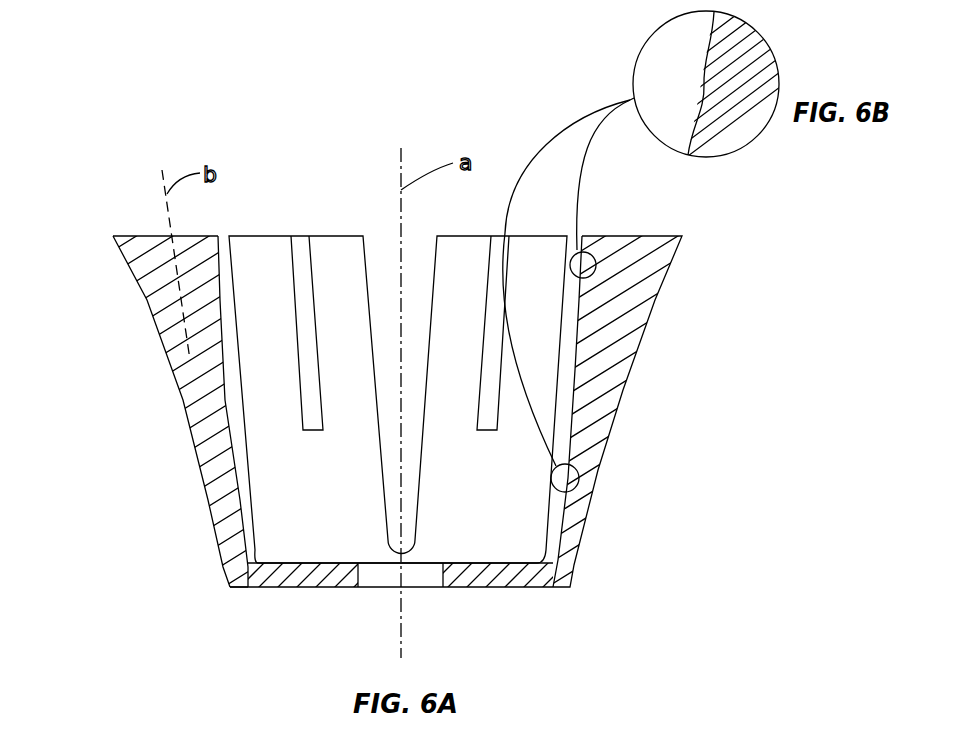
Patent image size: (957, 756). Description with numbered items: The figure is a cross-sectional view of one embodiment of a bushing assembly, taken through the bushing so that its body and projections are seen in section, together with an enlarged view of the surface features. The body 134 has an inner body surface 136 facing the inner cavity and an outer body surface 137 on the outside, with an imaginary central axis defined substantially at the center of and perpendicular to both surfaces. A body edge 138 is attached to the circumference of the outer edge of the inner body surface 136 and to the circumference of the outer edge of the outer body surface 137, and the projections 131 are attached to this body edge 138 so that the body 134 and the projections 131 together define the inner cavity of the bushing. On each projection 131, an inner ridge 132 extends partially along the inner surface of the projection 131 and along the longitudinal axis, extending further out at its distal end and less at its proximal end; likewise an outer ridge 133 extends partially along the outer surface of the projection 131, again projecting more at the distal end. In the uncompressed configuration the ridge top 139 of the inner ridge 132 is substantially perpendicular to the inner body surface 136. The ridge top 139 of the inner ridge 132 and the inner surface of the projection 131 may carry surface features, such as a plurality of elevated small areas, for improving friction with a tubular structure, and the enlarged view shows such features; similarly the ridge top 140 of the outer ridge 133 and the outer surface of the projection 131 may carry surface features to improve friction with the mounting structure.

The projection 131 is at (607, 338).
The inner ridge 132 is at (215, 253).
The outer ridge 133 is at (114, 245).
The body 134 is at (497, 577).
The inner body surface 136 is at (300, 563).
The outer body surface 137 is at (302, 582).
The body edge 138 is at (240, 575).
The ridge top 139 is at (225, 320).
The ridge top 140 is at (148, 312).